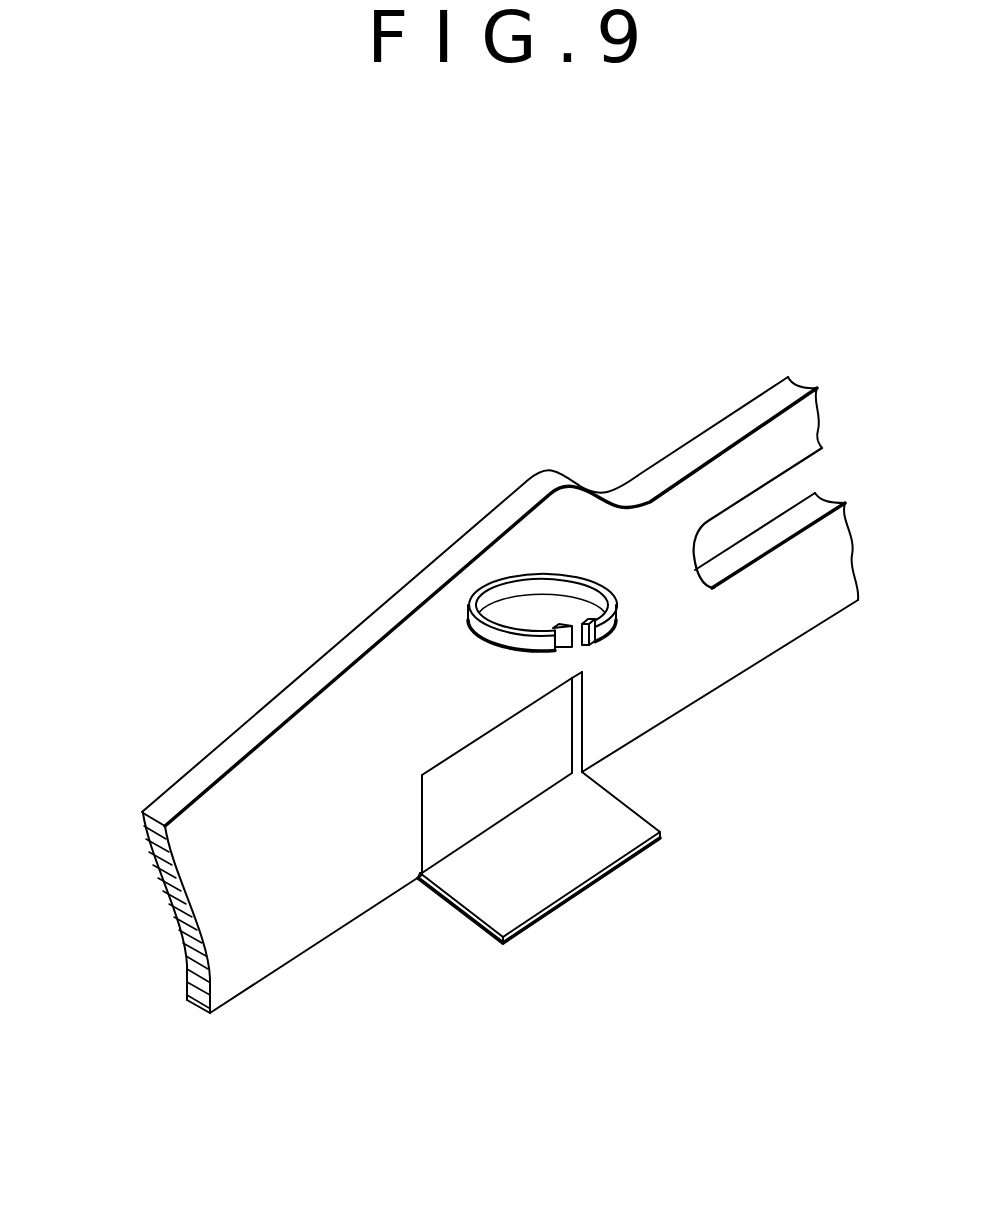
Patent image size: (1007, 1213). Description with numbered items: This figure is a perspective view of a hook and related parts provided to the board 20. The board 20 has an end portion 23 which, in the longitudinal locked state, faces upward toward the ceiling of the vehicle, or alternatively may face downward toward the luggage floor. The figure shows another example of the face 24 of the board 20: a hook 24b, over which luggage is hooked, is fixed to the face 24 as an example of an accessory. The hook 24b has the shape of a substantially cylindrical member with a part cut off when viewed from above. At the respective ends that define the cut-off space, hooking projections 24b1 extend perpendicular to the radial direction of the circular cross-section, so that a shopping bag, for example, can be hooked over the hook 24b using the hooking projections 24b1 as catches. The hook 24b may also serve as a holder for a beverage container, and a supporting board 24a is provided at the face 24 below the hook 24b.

The board 20 is at (393, 527).
The end portion 23 is at (230, 748).
The face 24 is at (730, 467).
The supporting board 24a is at (563, 868).
The hook 24b is at (542, 575).
The hooking projections 24b1 is at (563, 640).